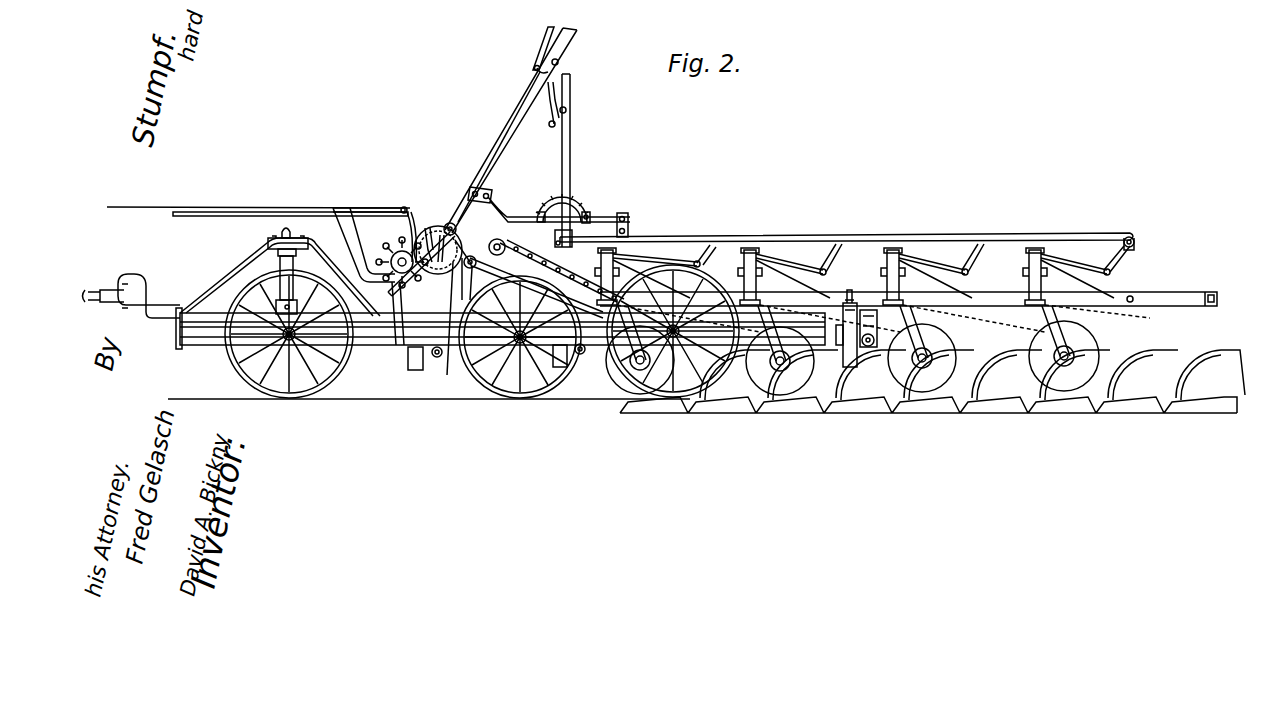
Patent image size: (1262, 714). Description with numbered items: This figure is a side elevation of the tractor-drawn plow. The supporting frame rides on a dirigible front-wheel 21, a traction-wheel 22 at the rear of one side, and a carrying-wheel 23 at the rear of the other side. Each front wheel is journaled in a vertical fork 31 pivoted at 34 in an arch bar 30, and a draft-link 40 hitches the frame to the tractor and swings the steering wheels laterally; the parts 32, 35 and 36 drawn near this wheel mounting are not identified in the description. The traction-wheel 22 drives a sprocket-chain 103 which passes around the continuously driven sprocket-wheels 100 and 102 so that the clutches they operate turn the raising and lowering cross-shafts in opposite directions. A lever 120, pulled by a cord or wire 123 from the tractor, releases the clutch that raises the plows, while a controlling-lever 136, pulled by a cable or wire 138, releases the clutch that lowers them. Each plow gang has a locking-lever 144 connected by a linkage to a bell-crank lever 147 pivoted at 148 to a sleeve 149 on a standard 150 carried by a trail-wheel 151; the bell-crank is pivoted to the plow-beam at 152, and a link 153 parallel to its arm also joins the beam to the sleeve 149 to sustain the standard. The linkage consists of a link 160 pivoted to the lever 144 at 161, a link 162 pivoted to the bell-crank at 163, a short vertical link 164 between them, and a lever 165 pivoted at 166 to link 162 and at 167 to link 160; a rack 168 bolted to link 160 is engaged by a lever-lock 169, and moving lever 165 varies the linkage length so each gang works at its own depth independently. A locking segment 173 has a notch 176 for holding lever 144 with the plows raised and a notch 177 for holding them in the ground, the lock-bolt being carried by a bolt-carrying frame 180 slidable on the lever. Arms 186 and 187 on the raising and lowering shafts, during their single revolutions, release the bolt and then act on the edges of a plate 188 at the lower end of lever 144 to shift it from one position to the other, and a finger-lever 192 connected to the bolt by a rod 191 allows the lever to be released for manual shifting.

The dirigible front-wheel 21 is at (340, 368).
The traction-wheel 22 is at (612, 398).
The carrying-wheel 23 is at (500, 397).
The arch bar 30 is at (250, 262).
The vertical fork 31 is at (293, 280).
The bearing block 32 is at (298, 306).
The pivot 34 is at (286, 232).
The collar 35 is at (296, 253).
The bracket plate 36 is at (304, 238).
The draft-link 40 is at (133, 290).
The sprocket-wheel 100 is at (390, 256).
The sprocket-wheel 102 is at (458, 283).
The sprocket-chain 103 is at (545, 258).
The lever 120 is at (347, 220).
The cord or wire 123 is at (208, 216).
The controlling-lever 136 is at (409, 213).
The cable or wire 138 is at (362, 208).
The lever 144 is at (510, 139).
The bell-crank lever 147 is at (740, 238).
The pivot 148 is at (795, 262).
The sleeve 149 is at (630, 268).
The standard 150 is at (758, 250).
The trail-wheel 151 is at (812, 372).
The pivot bolt 152 is at (708, 252).
The link 153 is at (945, 325).
The link 160 is at (508, 214).
The pivot 161 is at (492, 192).
The link 162 is at (900, 236).
The pivot 163 is at (1134, 243).
The short vertical link 164 is at (629, 222).
The lever 165 is at (571, 135).
The pivot 166 is at (568, 246).
The pivot 167 is at (590, 214).
The rack 168 is at (580, 200).
The lever-lock 169 is at (556, 96).
The locking segment 173 is at (442, 235).
The notch 176 is at (427, 228).
The notch 177 is at (457, 227).
The bolt-carrying frame 180 is at (455, 212).
The arm 186 is at (398, 240).
The arm 187 is at (450, 370).
The plate 188 is at (400, 340).
The rod 191 is at (526, 90).
The finger-lever 192 is at (547, 38).